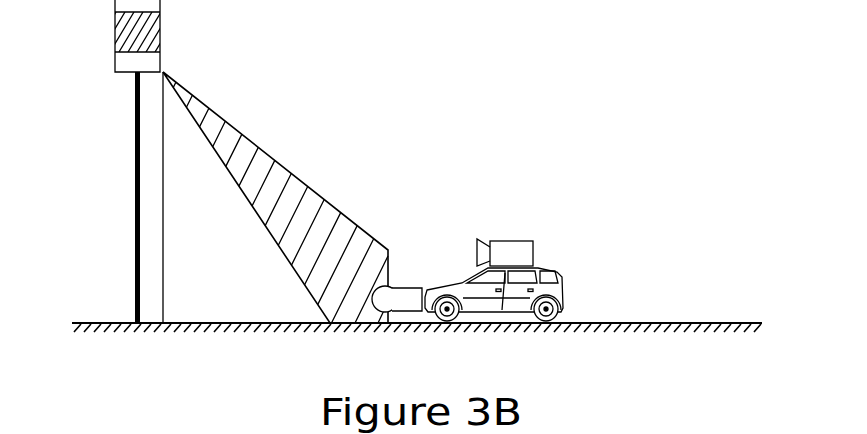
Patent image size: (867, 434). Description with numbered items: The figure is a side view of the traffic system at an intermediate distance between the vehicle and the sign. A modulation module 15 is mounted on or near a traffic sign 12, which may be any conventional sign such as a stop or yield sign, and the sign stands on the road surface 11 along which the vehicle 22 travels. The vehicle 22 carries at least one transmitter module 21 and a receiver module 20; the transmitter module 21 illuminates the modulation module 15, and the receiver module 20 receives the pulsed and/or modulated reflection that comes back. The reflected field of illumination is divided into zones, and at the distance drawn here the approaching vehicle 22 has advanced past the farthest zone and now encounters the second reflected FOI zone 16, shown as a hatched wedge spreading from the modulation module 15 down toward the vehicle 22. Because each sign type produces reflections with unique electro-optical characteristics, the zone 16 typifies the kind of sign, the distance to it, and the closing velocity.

The road surface 11 is at (488, 338).
The traffic sign 12 is at (100, 155).
The modulation module 15 is at (172, 32).
The second reflected FOI zone 16 is at (323, 203).
The receiver module 20 is at (508, 240).
The transmitter module 21 is at (408, 288).
The vehicle 22 is at (555, 260).